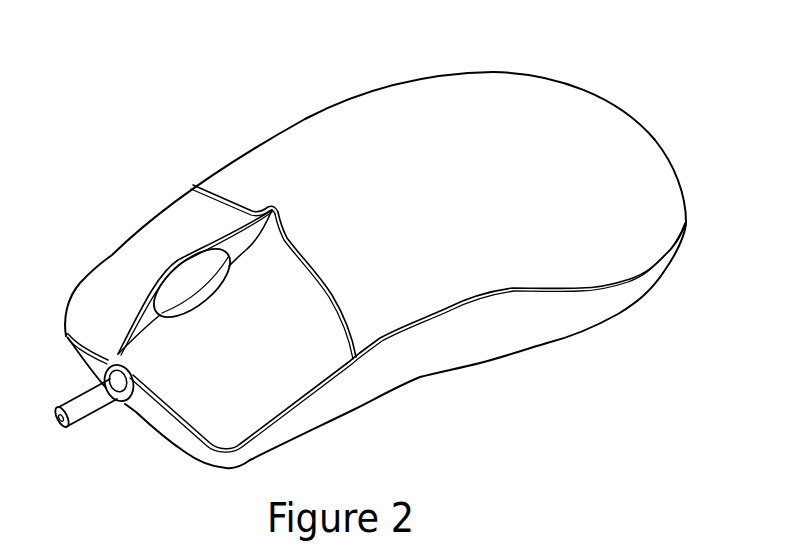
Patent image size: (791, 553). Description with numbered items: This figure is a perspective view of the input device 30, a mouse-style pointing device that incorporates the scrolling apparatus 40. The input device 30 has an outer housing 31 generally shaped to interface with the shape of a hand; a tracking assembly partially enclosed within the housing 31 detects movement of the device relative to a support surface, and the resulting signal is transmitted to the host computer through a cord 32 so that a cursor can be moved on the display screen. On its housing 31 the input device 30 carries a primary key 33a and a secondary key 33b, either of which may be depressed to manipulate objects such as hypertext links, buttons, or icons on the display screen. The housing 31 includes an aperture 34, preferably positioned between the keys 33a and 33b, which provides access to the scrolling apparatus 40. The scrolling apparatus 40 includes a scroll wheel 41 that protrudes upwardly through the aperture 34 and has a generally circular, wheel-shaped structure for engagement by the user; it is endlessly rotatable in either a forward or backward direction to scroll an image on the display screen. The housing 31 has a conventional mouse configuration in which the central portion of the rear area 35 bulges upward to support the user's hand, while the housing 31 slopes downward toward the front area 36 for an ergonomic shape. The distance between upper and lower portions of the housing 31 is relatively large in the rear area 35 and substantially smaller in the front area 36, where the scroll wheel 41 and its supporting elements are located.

The input device 30 is at (307, 118).
The outer housing 31 is at (497, 78).
The cord 32 is at (73, 413).
The primary key 33a is at (237, 435).
The secondary key 33b is at (114, 271).
The aperture 34 is at (170, 316).
The rear area 35 is at (653, 167).
The front area 36 is at (148, 413).
The scrolling apparatus 40 is at (190, 253).
The scroll wheel 41 is at (208, 277).